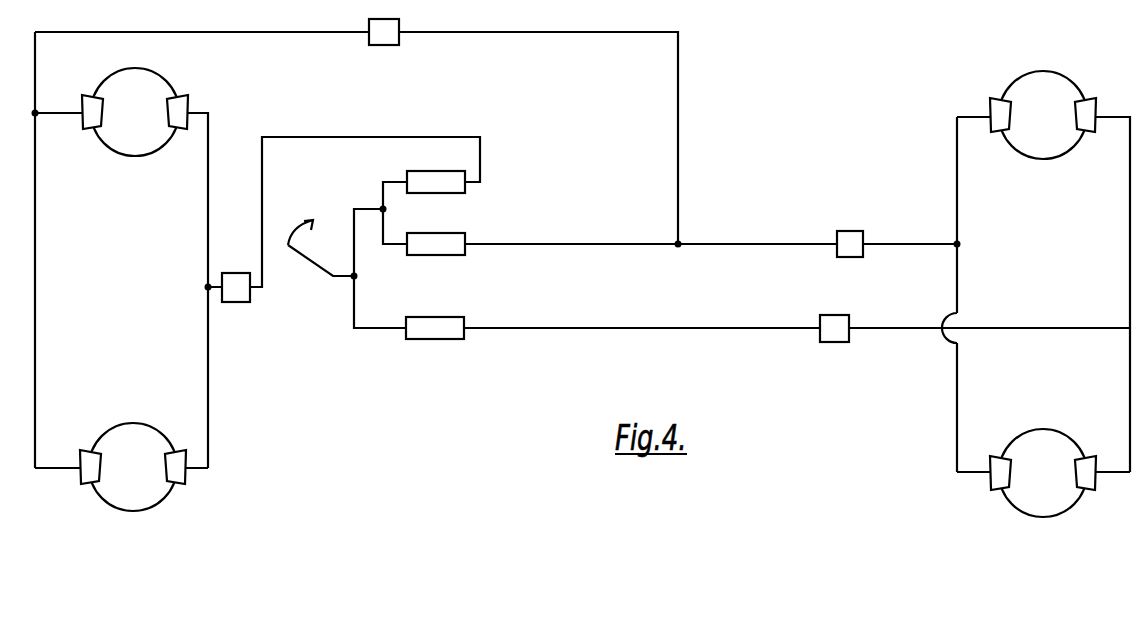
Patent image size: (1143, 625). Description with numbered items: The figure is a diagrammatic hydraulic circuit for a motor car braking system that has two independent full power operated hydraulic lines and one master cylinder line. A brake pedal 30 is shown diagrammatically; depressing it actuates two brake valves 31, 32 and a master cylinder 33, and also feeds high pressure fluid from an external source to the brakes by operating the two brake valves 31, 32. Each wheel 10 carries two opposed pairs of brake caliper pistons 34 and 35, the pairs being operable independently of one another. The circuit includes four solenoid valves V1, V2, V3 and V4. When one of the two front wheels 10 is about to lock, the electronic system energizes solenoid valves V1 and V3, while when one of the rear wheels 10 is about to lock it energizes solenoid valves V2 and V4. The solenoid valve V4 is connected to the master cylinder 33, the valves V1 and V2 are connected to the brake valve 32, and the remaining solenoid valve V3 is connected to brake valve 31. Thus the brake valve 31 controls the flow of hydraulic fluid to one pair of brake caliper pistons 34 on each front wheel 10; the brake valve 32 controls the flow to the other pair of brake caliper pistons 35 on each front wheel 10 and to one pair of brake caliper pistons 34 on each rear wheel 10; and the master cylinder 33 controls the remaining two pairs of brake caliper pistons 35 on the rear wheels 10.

The wheel 10 is at (588, 292).
The brake pedal 30 is at (313, 266).
The brake valve 31 is at (431, 197).
The brake valve 32 is at (431, 259).
The master cylinder 33 is at (430, 343).
The brake caliper pistons 34 is at (182, 122).
The brake caliper pistons 35 is at (87, 122).
The solenoid valve V1 is at (384, 47).
The solenoid valve V2 is at (853, 228).
The solenoid valve V3 is at (237, 301).
The solenoid valve V4 is at (835, 345).